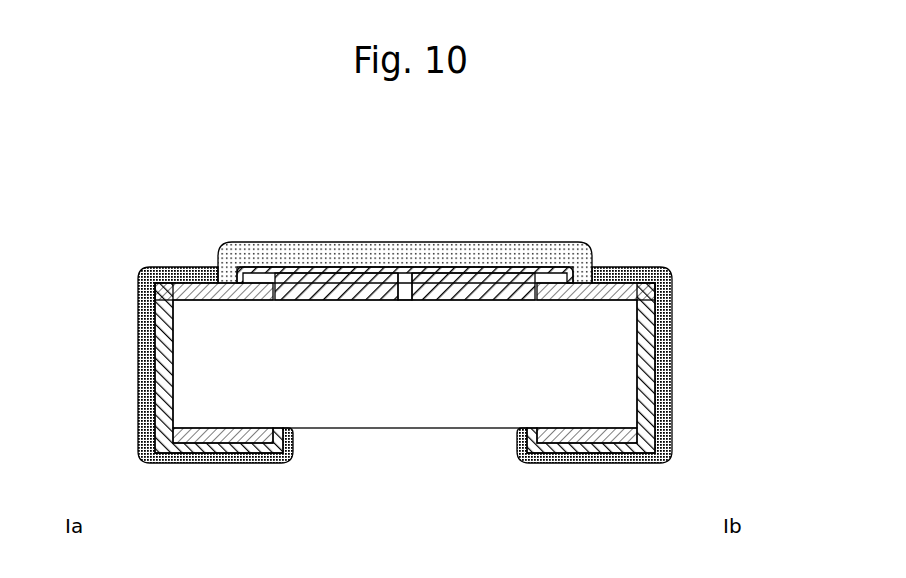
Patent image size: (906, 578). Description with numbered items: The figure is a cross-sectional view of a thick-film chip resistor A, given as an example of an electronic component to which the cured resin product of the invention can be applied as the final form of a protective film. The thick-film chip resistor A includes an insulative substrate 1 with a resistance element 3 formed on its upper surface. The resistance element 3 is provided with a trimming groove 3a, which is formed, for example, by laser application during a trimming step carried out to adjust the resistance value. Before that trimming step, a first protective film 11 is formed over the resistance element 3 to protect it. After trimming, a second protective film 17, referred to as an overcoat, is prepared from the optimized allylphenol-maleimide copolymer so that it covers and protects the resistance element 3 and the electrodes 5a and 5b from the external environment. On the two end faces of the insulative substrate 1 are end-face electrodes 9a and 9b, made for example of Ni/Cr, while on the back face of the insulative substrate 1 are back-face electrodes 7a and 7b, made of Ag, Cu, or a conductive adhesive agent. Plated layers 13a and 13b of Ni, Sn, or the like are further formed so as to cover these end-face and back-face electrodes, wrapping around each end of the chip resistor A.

The insulative substrate 1 is at (355, 397).
The resistance element 3 is at (460, 285).
The trimming groove 3a is at (406, 292).
The electrode 5a is at (190, 292).
The electrode 5b is at (614, 290).
The back-face electrode 7a is at (218, 440).
The back-face electrode 7b is at (583, 440).
The end-face electrode 9a is at (163, 353).
The end-face electrode 9b is at (645, 363).
The first protective film 11 is at (312, 270).
The plated layer 13a is at (142, 427).
The plated layer 13b is at (662, 417).
The second protective film 17 is at (565, 252).
The thick-film chip resistor A is at (712, 217).